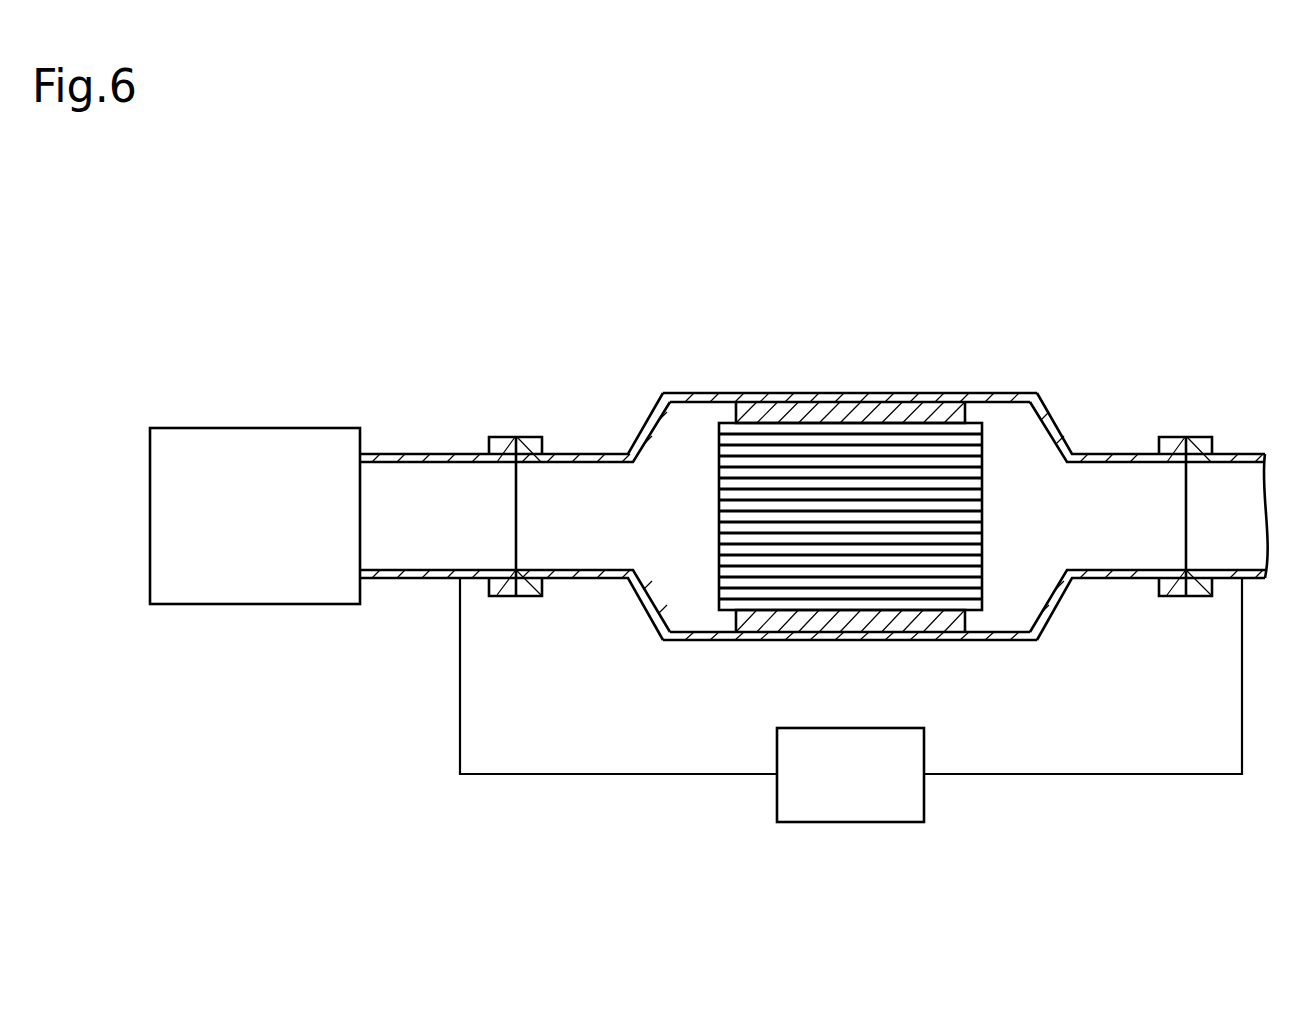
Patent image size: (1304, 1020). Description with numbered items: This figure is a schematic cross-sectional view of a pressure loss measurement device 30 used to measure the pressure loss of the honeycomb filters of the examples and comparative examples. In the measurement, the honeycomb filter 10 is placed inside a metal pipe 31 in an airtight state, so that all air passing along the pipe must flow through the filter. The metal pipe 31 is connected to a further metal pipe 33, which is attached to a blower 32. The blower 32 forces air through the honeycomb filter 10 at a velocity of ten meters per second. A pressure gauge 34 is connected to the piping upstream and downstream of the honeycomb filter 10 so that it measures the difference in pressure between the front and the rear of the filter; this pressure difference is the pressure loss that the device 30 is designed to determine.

The honeycomb filter 10 is at (982, 452).
The pressure loss measurement device 30 is at (869, 362).
The metal pipe 31 is at (690, 393).
The blower 32 is at (263, 428).
The metal pipe 33 is at (435, 454).
The pressure gauge 34 is at (850, 822).